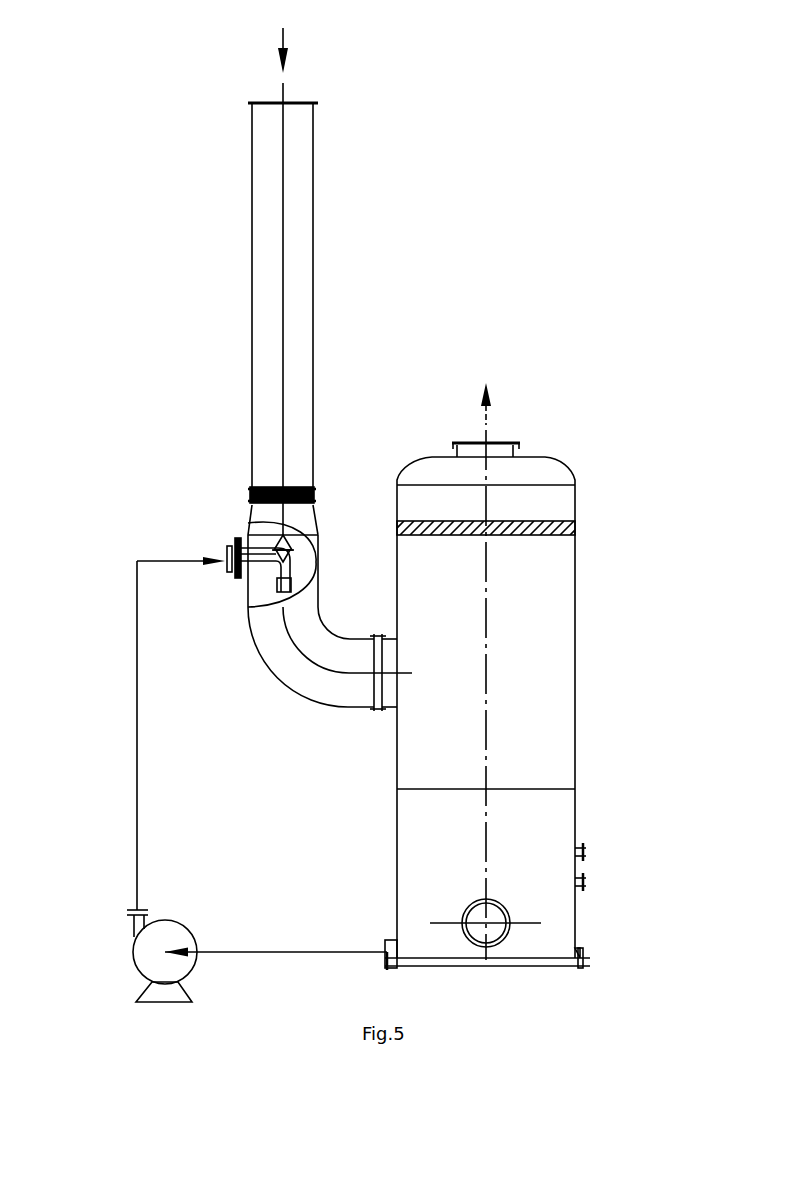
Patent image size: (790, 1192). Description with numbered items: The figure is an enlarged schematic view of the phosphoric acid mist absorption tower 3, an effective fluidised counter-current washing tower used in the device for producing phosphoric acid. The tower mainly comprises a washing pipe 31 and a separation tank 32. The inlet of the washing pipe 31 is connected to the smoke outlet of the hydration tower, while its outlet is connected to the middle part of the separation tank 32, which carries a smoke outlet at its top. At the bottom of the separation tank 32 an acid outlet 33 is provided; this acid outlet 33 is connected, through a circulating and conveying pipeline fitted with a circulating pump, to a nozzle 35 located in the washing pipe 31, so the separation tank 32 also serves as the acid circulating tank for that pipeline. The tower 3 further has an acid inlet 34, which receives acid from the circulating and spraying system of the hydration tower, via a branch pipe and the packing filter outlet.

The phosphoric acid mist absorption tower 3 is at (231, 608).
The washing pipe 31 is at (221, 281).
The separation tank 32 is at (542, 482).
The acid outlet 33 is at (323, 903).
The acid inlet 34 is at (635, 813).
The nozzle 35 is at (209, 518).